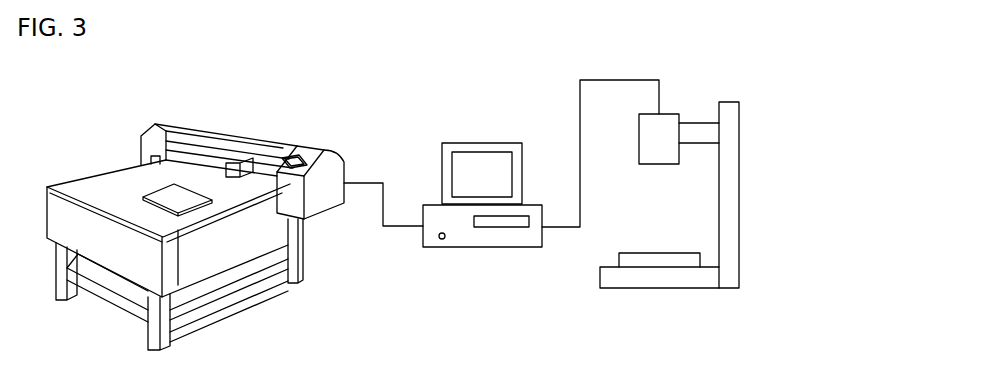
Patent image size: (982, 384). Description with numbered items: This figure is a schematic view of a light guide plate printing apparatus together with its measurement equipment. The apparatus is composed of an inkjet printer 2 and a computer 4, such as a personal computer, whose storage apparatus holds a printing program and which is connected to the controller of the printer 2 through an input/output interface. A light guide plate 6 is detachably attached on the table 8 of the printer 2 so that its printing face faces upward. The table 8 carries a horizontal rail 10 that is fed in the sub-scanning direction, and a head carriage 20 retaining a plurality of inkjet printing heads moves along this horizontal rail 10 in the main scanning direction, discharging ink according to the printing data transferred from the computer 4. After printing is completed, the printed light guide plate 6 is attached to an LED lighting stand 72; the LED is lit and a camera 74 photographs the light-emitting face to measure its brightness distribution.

The inkjet printer 2 is at (251, 126).
The computer 4 is at (464, 238).
The light guide plate 6 is at (182, 200).
The table 8 is at (110, 178).
The horizontal rail 10 is at (263, 152).
The head carriage 20 is at (223, 161).
The LED lighting stand 72 is at (646, 263).
The camera 74 is at (667, 126).